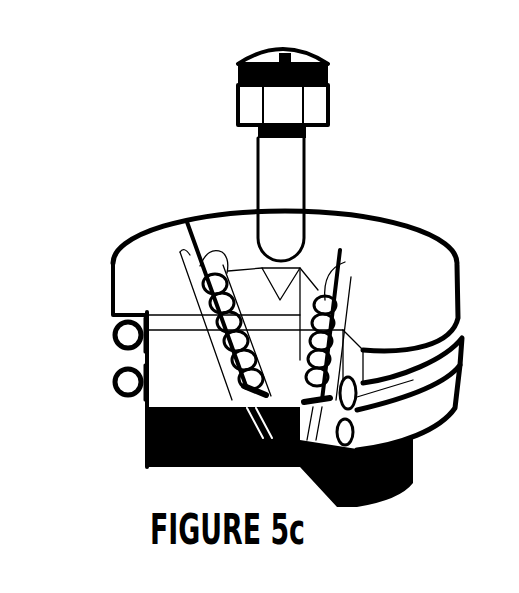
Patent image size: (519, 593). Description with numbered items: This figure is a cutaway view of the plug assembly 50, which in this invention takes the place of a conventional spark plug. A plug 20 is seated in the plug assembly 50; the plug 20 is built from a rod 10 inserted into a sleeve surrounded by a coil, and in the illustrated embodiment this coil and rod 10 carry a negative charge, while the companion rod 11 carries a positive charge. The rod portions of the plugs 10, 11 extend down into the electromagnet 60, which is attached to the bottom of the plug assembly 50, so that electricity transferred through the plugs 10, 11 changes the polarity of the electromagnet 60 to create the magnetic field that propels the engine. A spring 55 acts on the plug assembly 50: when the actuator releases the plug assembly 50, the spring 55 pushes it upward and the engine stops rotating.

The plug 20 is at (218, 161).
The plug assembly 50 is at (230, 218).
The rod 10 is at (203, 283).
The rod 11 is at (113, 330).
The spring 55 is at (114, 388).
The electromagnet 60 is at (140, 440).